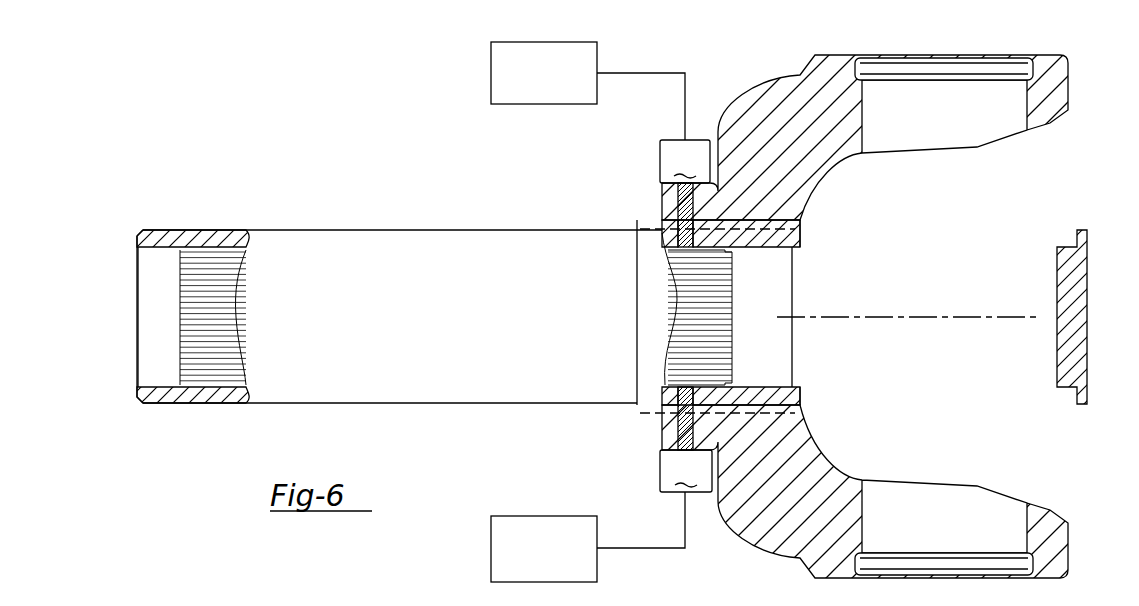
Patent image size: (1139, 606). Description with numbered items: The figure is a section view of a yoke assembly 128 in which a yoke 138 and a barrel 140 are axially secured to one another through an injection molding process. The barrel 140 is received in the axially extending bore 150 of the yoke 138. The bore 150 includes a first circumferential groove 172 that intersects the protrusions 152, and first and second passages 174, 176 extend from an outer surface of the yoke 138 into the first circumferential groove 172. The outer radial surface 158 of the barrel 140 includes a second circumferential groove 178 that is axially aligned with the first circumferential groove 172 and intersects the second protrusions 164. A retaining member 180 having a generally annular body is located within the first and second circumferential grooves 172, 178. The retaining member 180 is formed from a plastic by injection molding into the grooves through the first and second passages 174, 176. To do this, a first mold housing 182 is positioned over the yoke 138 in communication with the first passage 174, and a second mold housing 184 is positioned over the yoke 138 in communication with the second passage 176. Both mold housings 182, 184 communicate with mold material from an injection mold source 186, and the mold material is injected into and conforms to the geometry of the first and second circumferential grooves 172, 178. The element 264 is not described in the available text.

The yoke assembly 128 is at (285, 163).
The barrel 140 is at (388, 211).
The yoke 138 is at (760, 64).
The injection mold source 186 is at (491, 70).
The first mold housing 182 is at (685, 193).
The second mold housing 184 is at (686, 439).
The second passage 176 is at (682, 216).
The retaining member 180 is at (687, 231).
The second protrusions 164 is at (745, 220).
The axially extending bore 150 is at (757, 224).
The protrusions 152 is at (774, 403).
The second circumferential groove 178 is at (683, 403).
The first circumferential groove 172 is at (686, 408).
The first passage 174 is at (663, 449).
The outer radial surface 158 is at (437, 405).
The bearing cup 264 is at (751, 418).